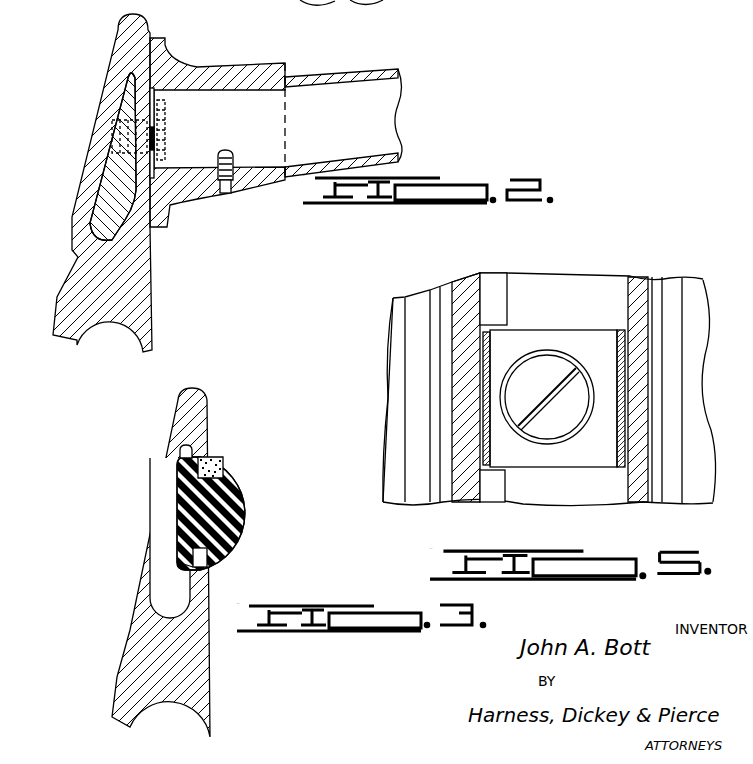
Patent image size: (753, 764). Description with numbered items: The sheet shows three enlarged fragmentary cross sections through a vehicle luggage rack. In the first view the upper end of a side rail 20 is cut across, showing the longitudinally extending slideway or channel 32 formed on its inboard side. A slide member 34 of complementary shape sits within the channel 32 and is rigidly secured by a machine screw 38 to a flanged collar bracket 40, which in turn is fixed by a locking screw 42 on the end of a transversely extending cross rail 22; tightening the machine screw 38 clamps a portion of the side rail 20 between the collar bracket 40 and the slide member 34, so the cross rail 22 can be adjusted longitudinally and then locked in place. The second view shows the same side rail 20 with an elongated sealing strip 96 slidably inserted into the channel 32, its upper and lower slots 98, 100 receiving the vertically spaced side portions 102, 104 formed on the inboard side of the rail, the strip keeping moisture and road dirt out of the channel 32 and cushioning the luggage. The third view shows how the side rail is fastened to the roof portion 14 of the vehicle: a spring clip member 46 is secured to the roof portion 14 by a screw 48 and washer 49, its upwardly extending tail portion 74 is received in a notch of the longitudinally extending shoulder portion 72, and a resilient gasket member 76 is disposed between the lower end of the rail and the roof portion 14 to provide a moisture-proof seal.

In FIG. 5, the roof portion 14 is at (397, 300).
In FIG. 2, the side rail 20 is at (71, 221).
In FIG. 5, the side rail 20 is at (461, 499).
In FIG. 3, the side rail 20 is at (140, 548).
In FIG. 2, the cross rail 22 is at (381, 66).
In FIG. 2, the slideway or channel 32 is at (113, 238).
In FIG. 3, the slideway or channel 32 is at (160, 610).
In FIG. 2, the slide member 34 is at (100, 168).
In FIG. 2, the machine screw 38 is at (168, 122).
In FIG. 2, the flanged collar bracket 40 is at (204, 60).
In FIG. 2, the locking screw 42 is at (218, 196).
In FIG. 5, the spring clip member 46 is at (541, 328).
In FIG. 5, the screw 48 is at (573, 354).
In FIG. 5, the washer 49 is at (560, 448).
In FIG. 5, the shoulder portion 72 is at (500, 292).
In FIG. 5, the tail portion 74 is at (489, 338).
In FIG. 5, the sealing or gasket member 76 is at (442, 294).
In FIG. 3, the sealing strip 96 is at (248, 488).
In FIG. 3, the slot 98 is at (200, 458).
In FIG. 3, the slot 100 is at (217, 565).
In FIG. 2, the side portion 102 is at (140, 92).
In FIG. 3, the side portion 102 is at (179, 458).
In FIG. 2, the side portion 104 is at (152, 178).
In FIG. 3, the side portion 104 is at (186, 563).